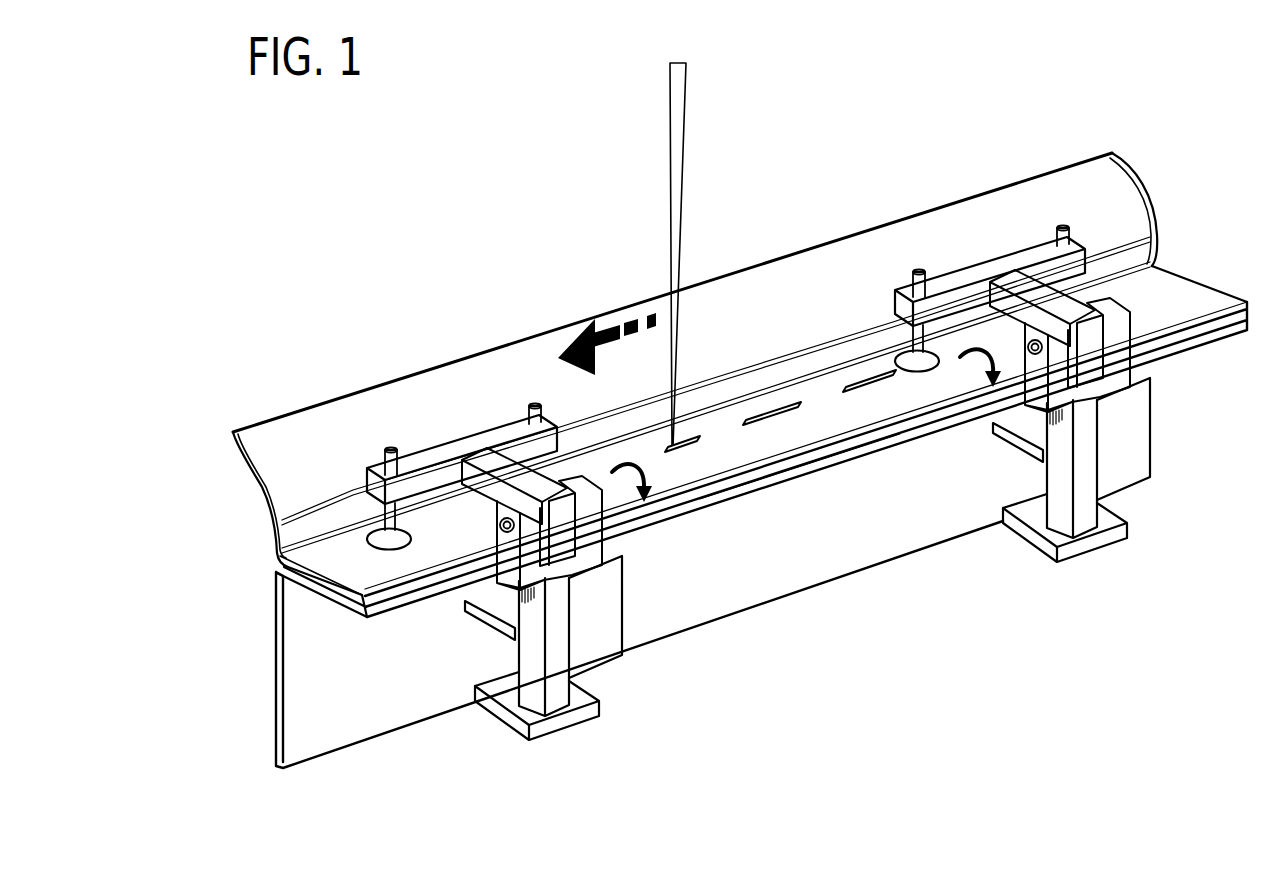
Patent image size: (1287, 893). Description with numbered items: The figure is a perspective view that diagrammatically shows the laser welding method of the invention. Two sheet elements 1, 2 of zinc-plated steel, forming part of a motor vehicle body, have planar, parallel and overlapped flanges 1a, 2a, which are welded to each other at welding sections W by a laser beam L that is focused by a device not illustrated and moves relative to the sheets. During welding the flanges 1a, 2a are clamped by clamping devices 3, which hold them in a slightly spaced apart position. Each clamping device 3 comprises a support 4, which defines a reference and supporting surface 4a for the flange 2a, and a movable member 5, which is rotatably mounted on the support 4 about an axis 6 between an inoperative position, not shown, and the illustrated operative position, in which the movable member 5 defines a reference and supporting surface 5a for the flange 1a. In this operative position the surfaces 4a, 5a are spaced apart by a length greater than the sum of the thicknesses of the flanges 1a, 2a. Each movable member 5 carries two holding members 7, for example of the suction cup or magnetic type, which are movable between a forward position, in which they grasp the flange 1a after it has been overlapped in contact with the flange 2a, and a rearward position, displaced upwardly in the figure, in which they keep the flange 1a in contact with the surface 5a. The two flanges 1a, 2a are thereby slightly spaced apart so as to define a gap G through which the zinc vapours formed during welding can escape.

The sheet element 1 is at (297, 405).
The flange 1a is at (344, 560).
The sheet element 2 is at (266, 698).
The flange 2a is at (331, 598).
The clamping device 3 is at (793, 482).
The support 4 is at (582, 634).
The reference and supporting surface 4a is at (517, 560).
The movable member 5 is at (426, 440).
The reference and supporting surface 5a is at (497, 546).
The axis 6 is at (480, 548).
The holding member 7 is at (560, 466).
The gap G is at (788, 473).
The laser beam L is at (680, 113).
The welding section W is at (862, 382).